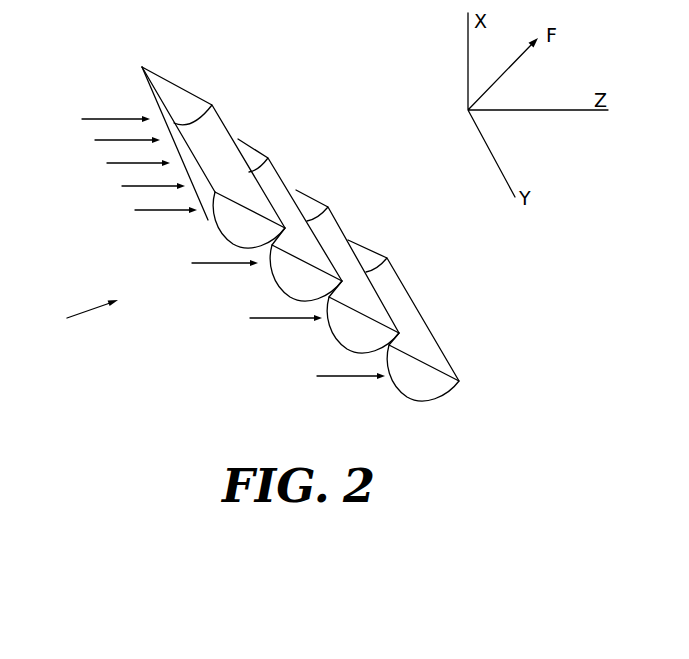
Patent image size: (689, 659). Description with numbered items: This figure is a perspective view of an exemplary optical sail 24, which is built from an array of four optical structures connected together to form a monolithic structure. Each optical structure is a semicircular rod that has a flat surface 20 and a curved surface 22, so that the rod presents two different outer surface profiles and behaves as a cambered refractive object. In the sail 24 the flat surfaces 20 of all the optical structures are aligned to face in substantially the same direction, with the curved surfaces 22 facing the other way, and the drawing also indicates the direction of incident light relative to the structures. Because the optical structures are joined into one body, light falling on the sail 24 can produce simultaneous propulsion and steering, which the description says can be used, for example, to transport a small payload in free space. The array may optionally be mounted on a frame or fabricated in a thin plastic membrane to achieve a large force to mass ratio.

The flat surface 20 is at (207, 131).
The curved surface 22 is at (152, 95).
The optical sail 24 is at (73, 319).